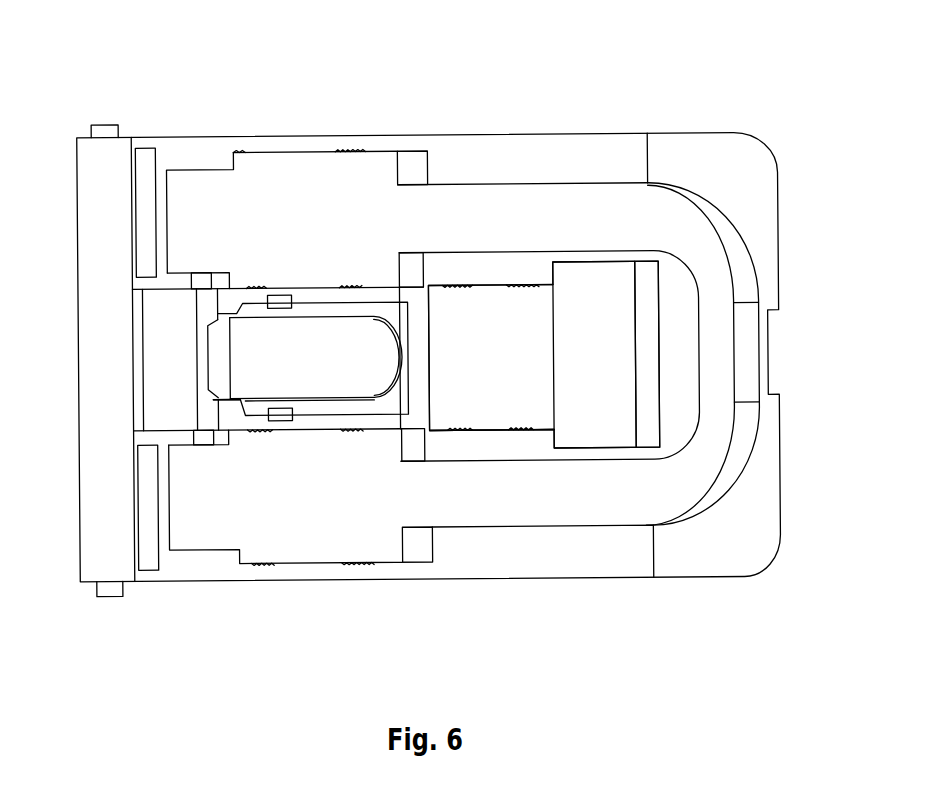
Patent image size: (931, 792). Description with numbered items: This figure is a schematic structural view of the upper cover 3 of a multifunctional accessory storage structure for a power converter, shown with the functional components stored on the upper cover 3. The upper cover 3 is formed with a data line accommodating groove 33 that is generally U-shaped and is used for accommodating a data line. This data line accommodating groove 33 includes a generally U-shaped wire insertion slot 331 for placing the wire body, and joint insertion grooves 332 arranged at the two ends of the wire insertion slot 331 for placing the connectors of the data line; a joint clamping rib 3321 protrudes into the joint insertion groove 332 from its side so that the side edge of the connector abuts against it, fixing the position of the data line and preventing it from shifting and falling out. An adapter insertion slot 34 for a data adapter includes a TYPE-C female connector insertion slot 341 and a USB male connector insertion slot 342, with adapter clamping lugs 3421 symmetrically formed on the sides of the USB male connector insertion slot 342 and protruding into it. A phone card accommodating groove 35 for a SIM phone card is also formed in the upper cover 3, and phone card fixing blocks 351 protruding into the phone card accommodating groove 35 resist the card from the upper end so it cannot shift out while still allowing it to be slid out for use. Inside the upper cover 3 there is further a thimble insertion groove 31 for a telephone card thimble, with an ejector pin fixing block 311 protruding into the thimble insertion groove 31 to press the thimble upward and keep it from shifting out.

The upper cover 3 is at (740, 168).
The thimble insertion groove 31 is at (217, 383).
The ejector pin fixing block 311 is at (221, 395).
The data line accommodating groove 33 is at (433, 205).
The wire insertion slot 331 is at (481, 208).
The joint insertion groove 332 is at (296, 177).
The joint clamping rib 3321 is at (358, 154).
The adapter insertion slot 34 is at (556, 421).
The TYPE-C female connector insertion slot 341 is at (600, 413).
The USB male connector insertion slot 342 is at (490, 418).
The adapter clamping lug 3421 is at (471, 432).
The phone card accommodating groove 35 is at (347, 301).
The phone card fixing block 351 is at (280, 420).